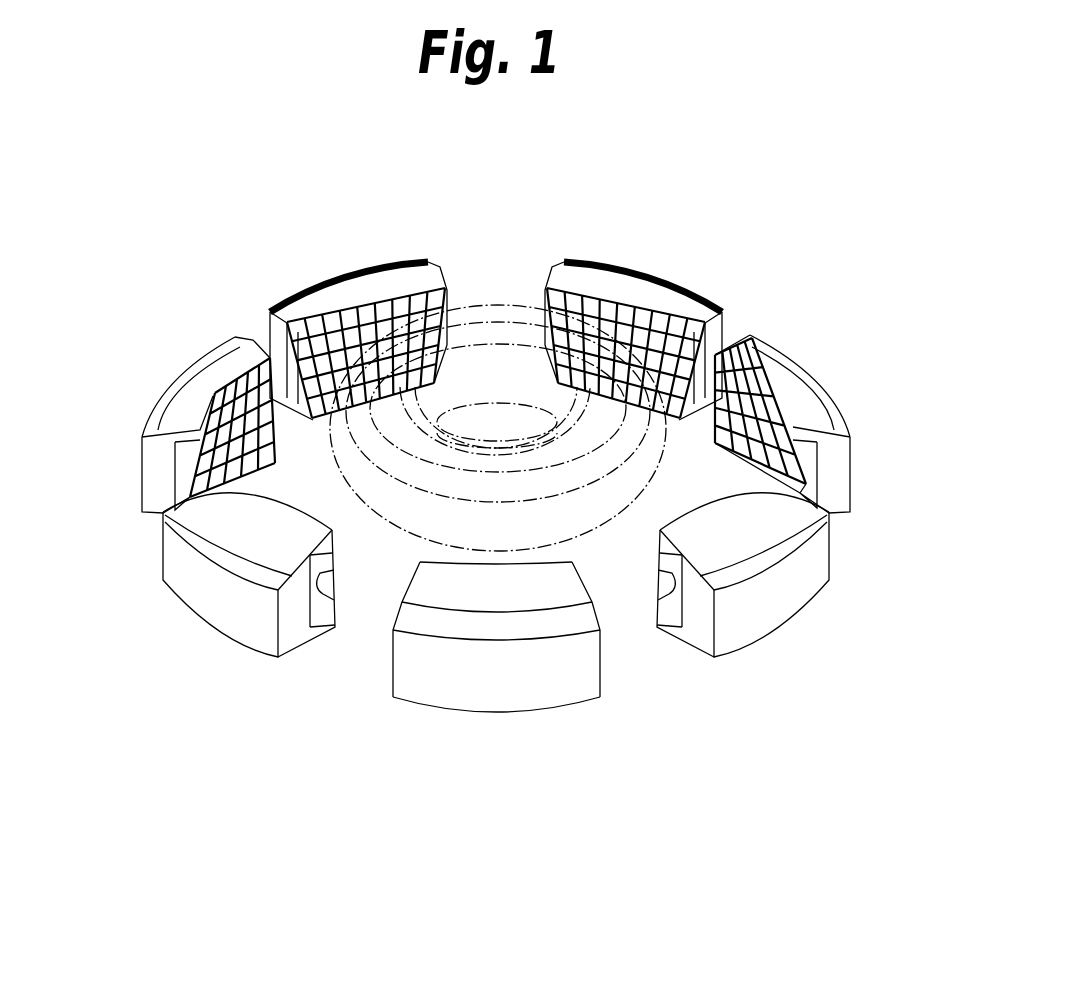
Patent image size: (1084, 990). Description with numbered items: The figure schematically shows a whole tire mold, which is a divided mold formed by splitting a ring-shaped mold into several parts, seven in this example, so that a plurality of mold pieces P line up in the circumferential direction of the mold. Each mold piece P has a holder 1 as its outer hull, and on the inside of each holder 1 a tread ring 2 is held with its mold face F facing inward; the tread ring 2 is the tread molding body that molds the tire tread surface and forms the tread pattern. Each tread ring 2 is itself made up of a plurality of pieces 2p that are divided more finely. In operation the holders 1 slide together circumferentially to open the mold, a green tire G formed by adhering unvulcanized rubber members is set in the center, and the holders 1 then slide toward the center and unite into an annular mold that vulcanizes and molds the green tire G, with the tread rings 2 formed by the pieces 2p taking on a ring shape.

The holder 1 is at (503, 469).
The tread ring 2 is at (498, 460).
The piece 2p is at (552, 295).
The mold piece P is at (379, 258).
The mold face F is at (298, 404).
The green tire G is at (489, 300).